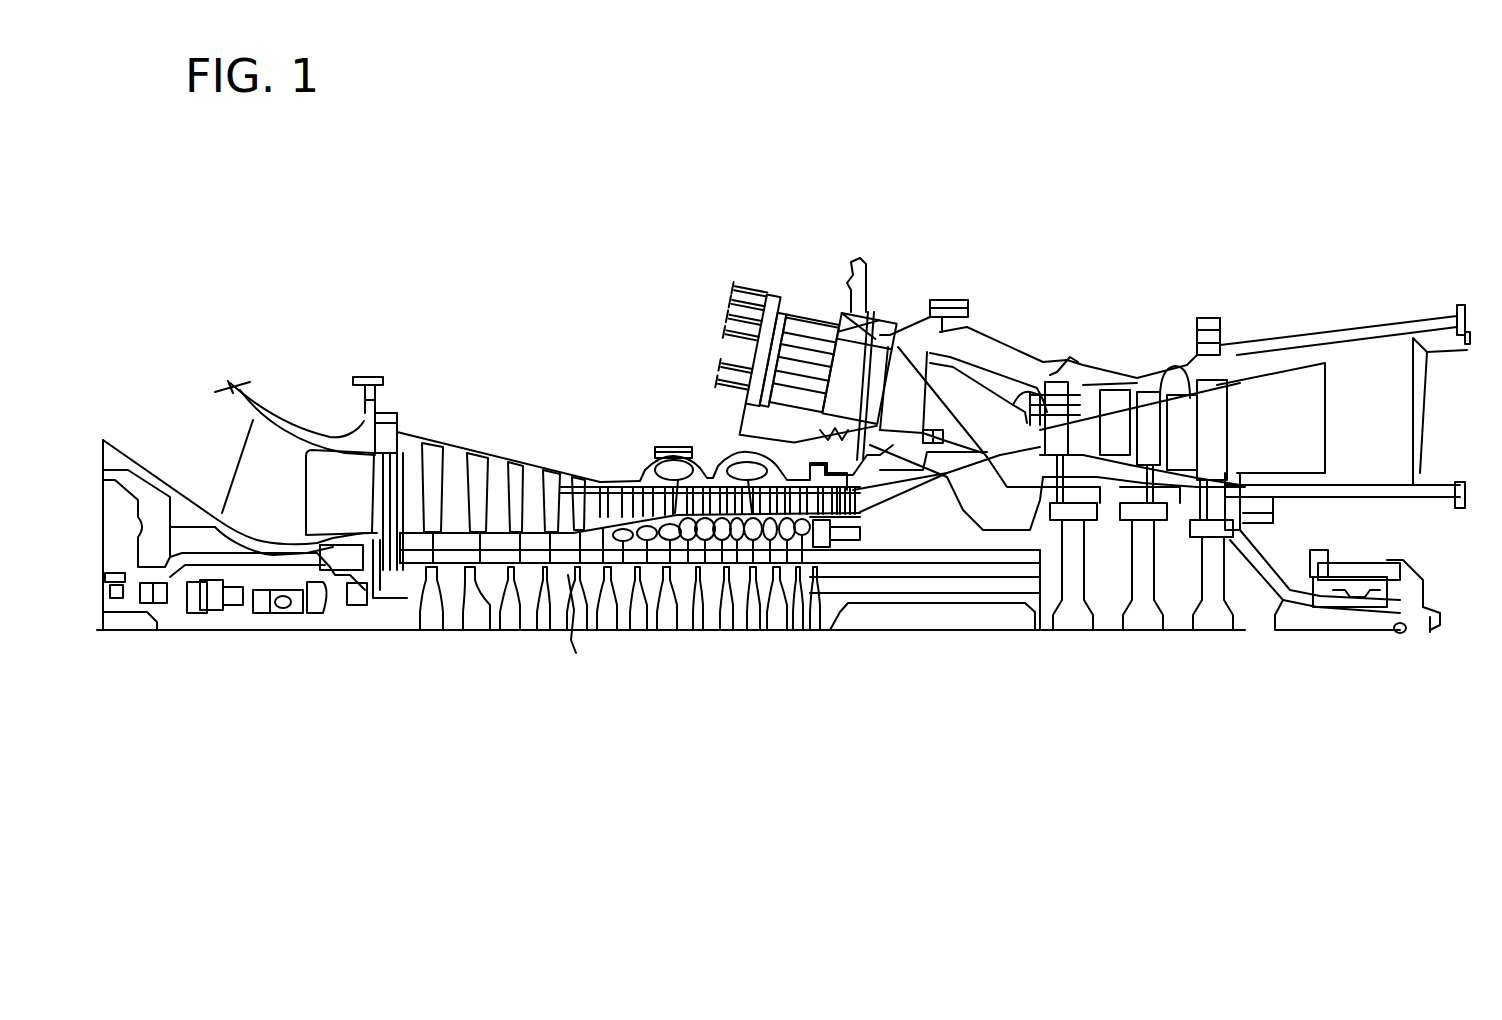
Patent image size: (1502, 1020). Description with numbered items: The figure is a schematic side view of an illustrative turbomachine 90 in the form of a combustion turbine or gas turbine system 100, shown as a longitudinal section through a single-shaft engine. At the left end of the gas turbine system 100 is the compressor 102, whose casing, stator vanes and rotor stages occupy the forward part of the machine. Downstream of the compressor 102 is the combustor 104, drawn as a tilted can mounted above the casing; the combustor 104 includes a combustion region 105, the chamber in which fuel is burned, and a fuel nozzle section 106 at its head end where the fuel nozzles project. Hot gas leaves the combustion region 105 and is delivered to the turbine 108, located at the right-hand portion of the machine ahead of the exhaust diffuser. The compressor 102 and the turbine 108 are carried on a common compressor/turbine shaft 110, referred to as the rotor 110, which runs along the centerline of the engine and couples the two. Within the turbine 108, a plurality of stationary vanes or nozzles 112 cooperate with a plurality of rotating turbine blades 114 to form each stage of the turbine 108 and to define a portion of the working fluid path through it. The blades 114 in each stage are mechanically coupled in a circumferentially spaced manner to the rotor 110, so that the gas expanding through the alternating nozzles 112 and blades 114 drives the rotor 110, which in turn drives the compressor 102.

The turbomachine 90 is at (1135, 215).
The gas turbine system 100 is at (285, 245).
The compressor 102 is at (515, 462).
The combustor 104 is at (912, 230).
The combustion region 105 is at (855, 358).
The fuel nozzle section 106 is at (780, 295).
The turbine 108 is at (1181, 395).
The common compressor/turbine shaft 110 is at (412, 585).
The stationary vanes or nozzles 112 is at (1180, 423).
The rotating turbine blades 114 is at (1147, 437).